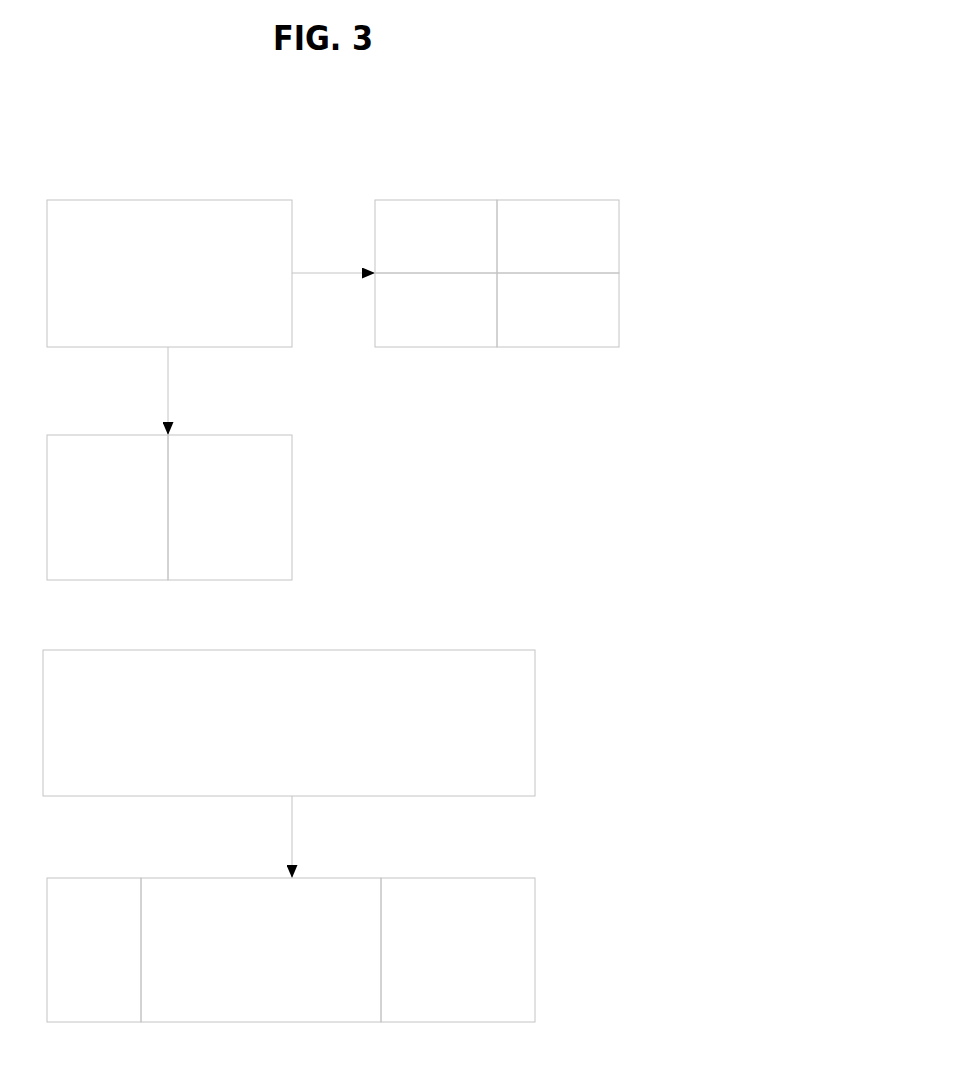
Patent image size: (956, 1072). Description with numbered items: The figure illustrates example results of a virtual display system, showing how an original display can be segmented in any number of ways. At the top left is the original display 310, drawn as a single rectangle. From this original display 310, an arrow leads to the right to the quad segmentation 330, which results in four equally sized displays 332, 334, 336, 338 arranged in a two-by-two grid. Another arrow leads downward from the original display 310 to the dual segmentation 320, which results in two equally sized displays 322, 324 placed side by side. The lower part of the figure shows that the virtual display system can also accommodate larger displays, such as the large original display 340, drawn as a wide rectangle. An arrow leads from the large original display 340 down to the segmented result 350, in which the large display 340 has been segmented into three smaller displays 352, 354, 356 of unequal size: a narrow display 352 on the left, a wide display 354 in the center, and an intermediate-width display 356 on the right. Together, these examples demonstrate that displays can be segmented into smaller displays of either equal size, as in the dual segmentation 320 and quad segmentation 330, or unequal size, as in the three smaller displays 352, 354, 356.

The original display 310 is at (169, 248).
The dual segmentation 320 is at (216, 481).
The equally sized display 322 is at (92, 521).
The equally sized display 324 is at (204, 521).
The quad segmentation 330 is at (544, 249).
The equally sized display 332 is at (420, 249).
The equally sized display 334 is at (532, 249).
The equally sized display 336 is at (420, 322).
The equally sized display 338 is at (528, 322).
The large original display 340 is at (289, 698).
The segmented large display 350 is at (338, 923).
The smaller display 352 is at (73, 966).
The smaller display 354 is at (274, 966).
The smaller display 356 is at (433, 966).